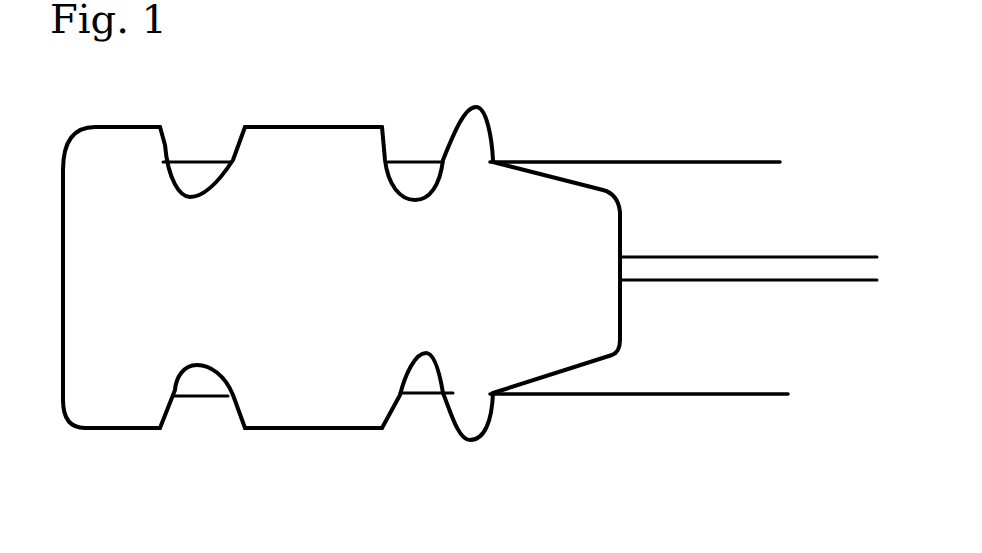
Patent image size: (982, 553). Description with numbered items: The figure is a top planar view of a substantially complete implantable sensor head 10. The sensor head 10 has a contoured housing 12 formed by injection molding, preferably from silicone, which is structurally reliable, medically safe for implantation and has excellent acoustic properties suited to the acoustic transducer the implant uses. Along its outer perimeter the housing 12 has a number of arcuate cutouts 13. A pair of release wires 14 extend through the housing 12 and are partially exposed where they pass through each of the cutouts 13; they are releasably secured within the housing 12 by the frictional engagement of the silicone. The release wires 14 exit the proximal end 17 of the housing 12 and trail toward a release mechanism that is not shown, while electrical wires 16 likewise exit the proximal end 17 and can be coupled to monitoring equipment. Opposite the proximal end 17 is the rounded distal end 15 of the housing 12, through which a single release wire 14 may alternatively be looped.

The sensor head 10 is at (478, 277).
The housing 12 is at (313, 152).
The arcuate cutouts 13 is at (428, 136).
The release wires 14 is at (690, 161).
The distal end 15 is at (100, 188).
The electrical wires 16 is at (728, 257).
The proximal end 17 is at (583, 328).